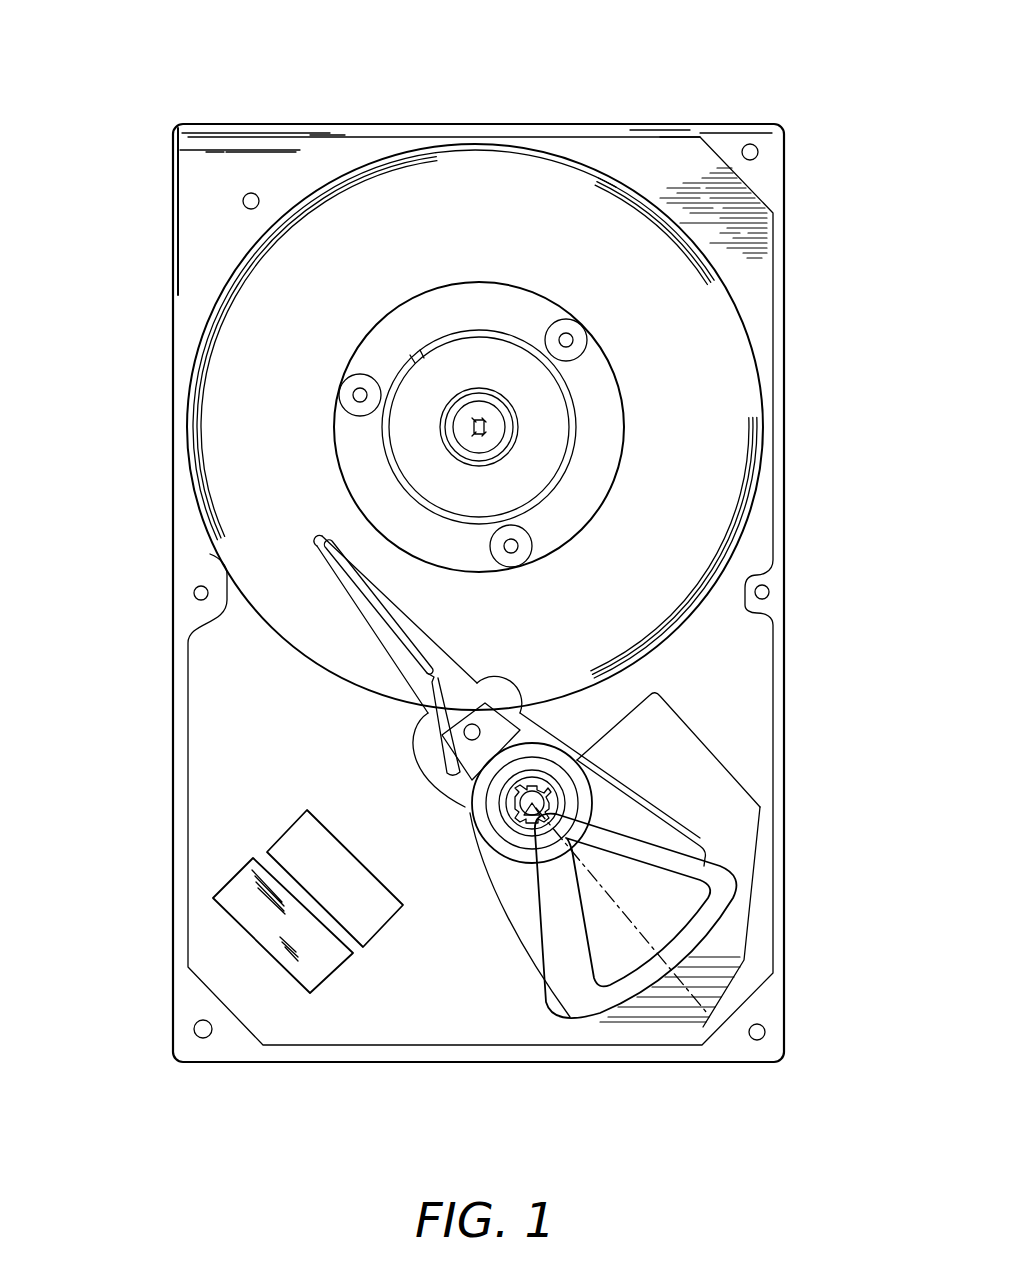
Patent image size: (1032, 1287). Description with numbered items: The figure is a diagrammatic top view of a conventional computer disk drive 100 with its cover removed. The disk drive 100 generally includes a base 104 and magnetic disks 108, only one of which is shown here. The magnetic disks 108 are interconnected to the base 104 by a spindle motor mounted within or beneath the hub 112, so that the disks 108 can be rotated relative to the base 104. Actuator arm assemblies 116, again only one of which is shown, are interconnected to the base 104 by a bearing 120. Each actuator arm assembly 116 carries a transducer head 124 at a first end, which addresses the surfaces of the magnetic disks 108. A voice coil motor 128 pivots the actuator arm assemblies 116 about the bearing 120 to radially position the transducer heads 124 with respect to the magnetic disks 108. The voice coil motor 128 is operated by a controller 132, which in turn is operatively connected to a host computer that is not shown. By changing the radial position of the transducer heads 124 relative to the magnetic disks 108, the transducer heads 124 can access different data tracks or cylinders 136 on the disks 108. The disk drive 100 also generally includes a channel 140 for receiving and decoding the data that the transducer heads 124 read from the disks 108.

The computer disk drive 100 is at (490, 100).
The base 104 is at (753, 682).
The magnetic disks 108 is at (737, 393).
The hub 112 is at (463, 442).
The actuator arm assemblies 116 is at (356, 618).
The bearing 120 is at (522, 820).
The transducer head 124 is at (315, 546).
The voice coil motor 128 is at (598, 992).
The controller 132 is at (260, 937).
The data tracks or cylinders 136 is at (750, 487).
The channel 140 is at (282, 838).